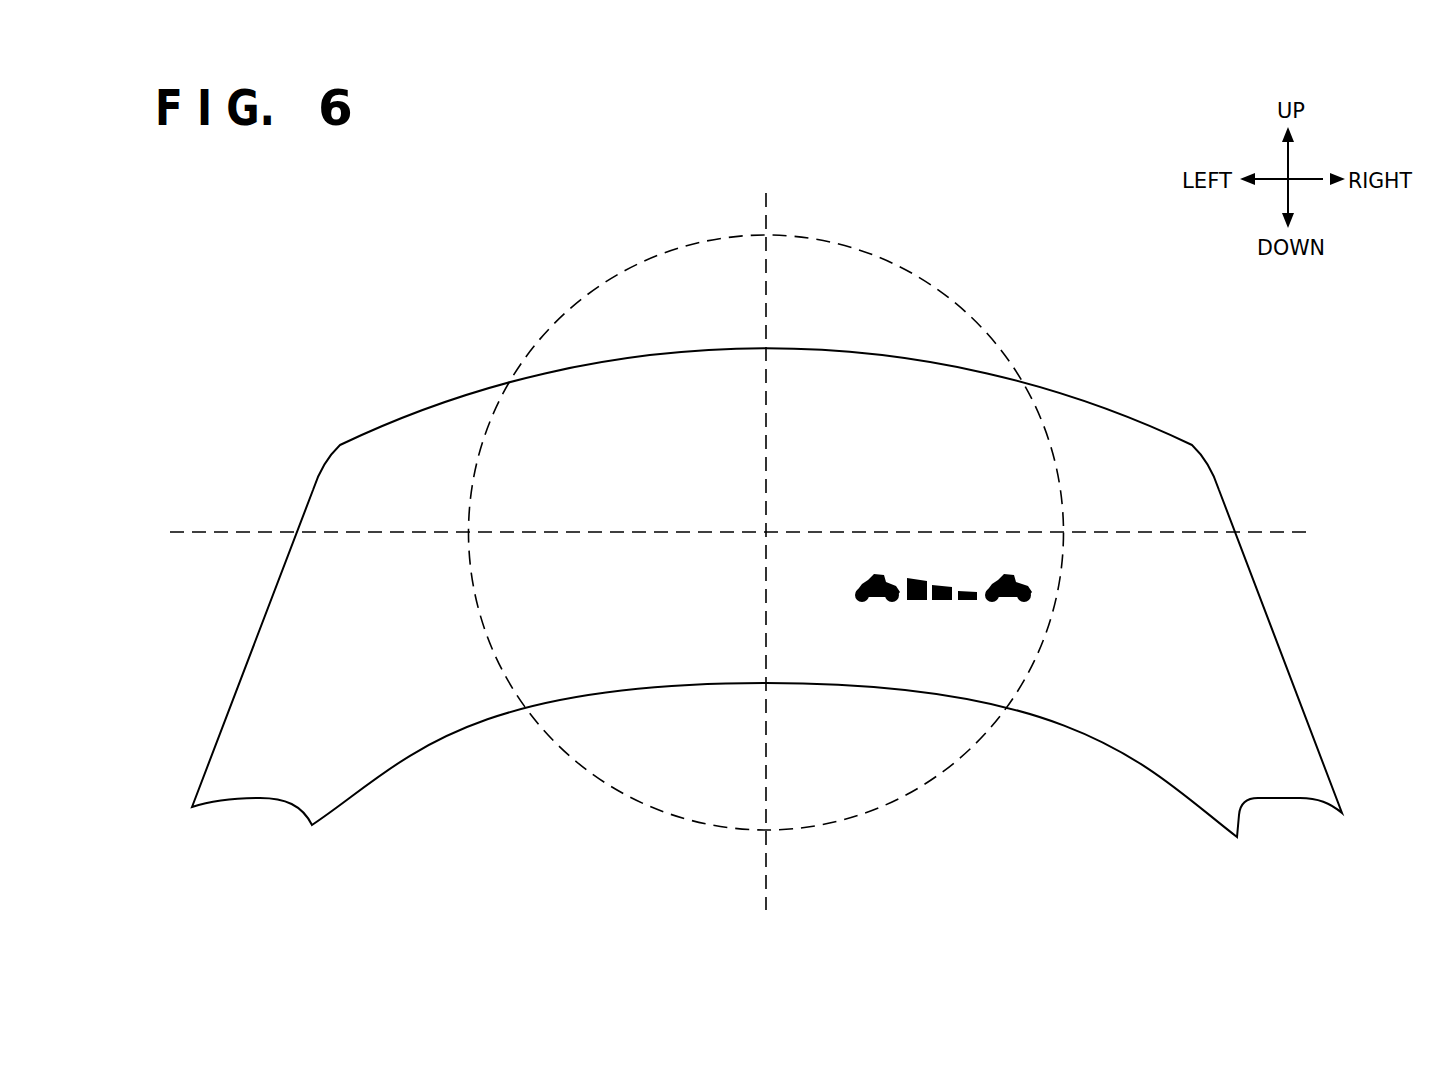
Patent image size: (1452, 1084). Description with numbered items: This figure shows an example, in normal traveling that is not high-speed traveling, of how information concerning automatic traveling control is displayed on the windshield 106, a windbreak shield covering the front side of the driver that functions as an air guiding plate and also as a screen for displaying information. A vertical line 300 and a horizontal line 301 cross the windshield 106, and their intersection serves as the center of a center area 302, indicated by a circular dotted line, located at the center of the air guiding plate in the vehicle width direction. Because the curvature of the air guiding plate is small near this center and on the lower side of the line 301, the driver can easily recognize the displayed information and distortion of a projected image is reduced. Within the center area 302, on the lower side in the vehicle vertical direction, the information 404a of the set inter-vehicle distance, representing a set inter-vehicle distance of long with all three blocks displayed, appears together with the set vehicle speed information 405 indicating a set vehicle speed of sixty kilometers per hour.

The windshield 106 is at (1163, 433).
The line 300 is at (768, 312).
The line 301 is at (1268, 532).
The center area 302 is at (898, 263).
The information of the set inter-vehicle distance 404a is at (940, 560).
The set vehicle speed information 405 is at (946, 718).